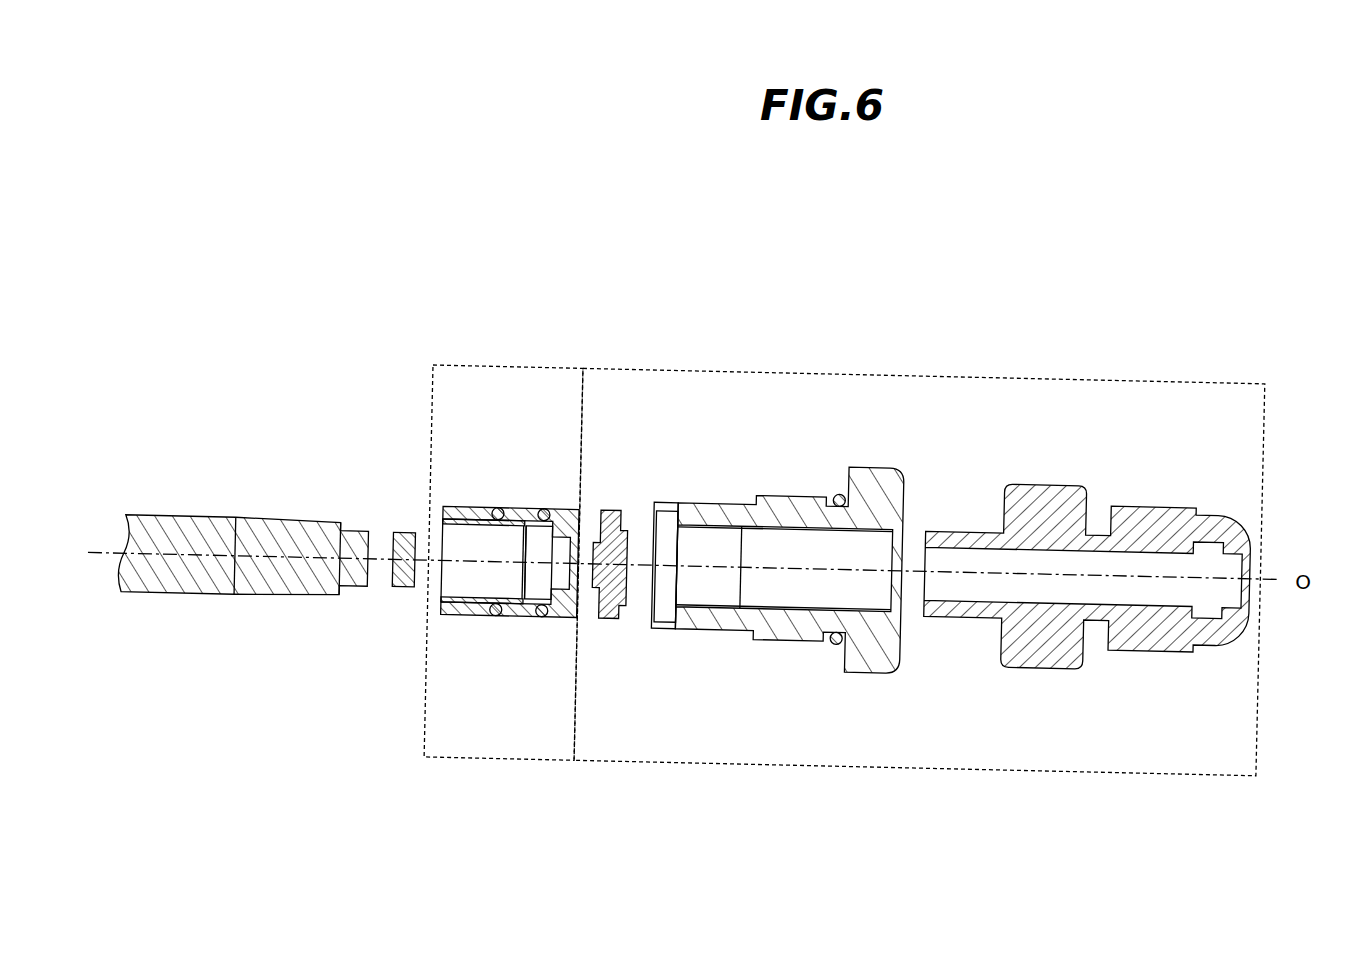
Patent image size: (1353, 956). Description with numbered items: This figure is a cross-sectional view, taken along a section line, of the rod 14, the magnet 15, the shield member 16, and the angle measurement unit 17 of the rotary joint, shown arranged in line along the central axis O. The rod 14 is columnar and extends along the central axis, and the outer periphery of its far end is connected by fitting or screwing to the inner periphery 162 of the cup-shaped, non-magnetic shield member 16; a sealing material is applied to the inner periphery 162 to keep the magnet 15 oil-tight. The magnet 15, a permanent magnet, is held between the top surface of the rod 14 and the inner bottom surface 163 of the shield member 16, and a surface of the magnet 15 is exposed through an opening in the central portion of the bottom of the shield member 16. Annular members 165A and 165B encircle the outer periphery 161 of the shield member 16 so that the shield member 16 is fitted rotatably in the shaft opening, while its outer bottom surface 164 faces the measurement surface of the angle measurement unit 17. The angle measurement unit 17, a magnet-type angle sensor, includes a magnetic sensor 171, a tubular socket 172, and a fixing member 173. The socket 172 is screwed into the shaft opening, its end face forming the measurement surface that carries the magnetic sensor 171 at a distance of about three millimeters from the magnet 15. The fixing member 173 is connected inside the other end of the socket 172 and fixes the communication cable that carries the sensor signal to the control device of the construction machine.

The rod 14 is at (180, 513).
The magnet 15 is at (405, 533).
The shield member 16 is at (518, 365).
The outer periphery 161 is at (455, 507).
The inner periphery 162 is at (442, 600).
The inner bottom surface 163 is at (562, 507).
The outer bottom surface 164 is at (603, 515).
The annular member 165A is at (497, 507).
The annular member 165B is at (540, 507).
The angle measurement unit 17 is at (1130, 386).
The magnetic sensor 171 is at (612, 622).
The socket 172 is at (885, 668).
The fixing member 173 is at (1048, 650).